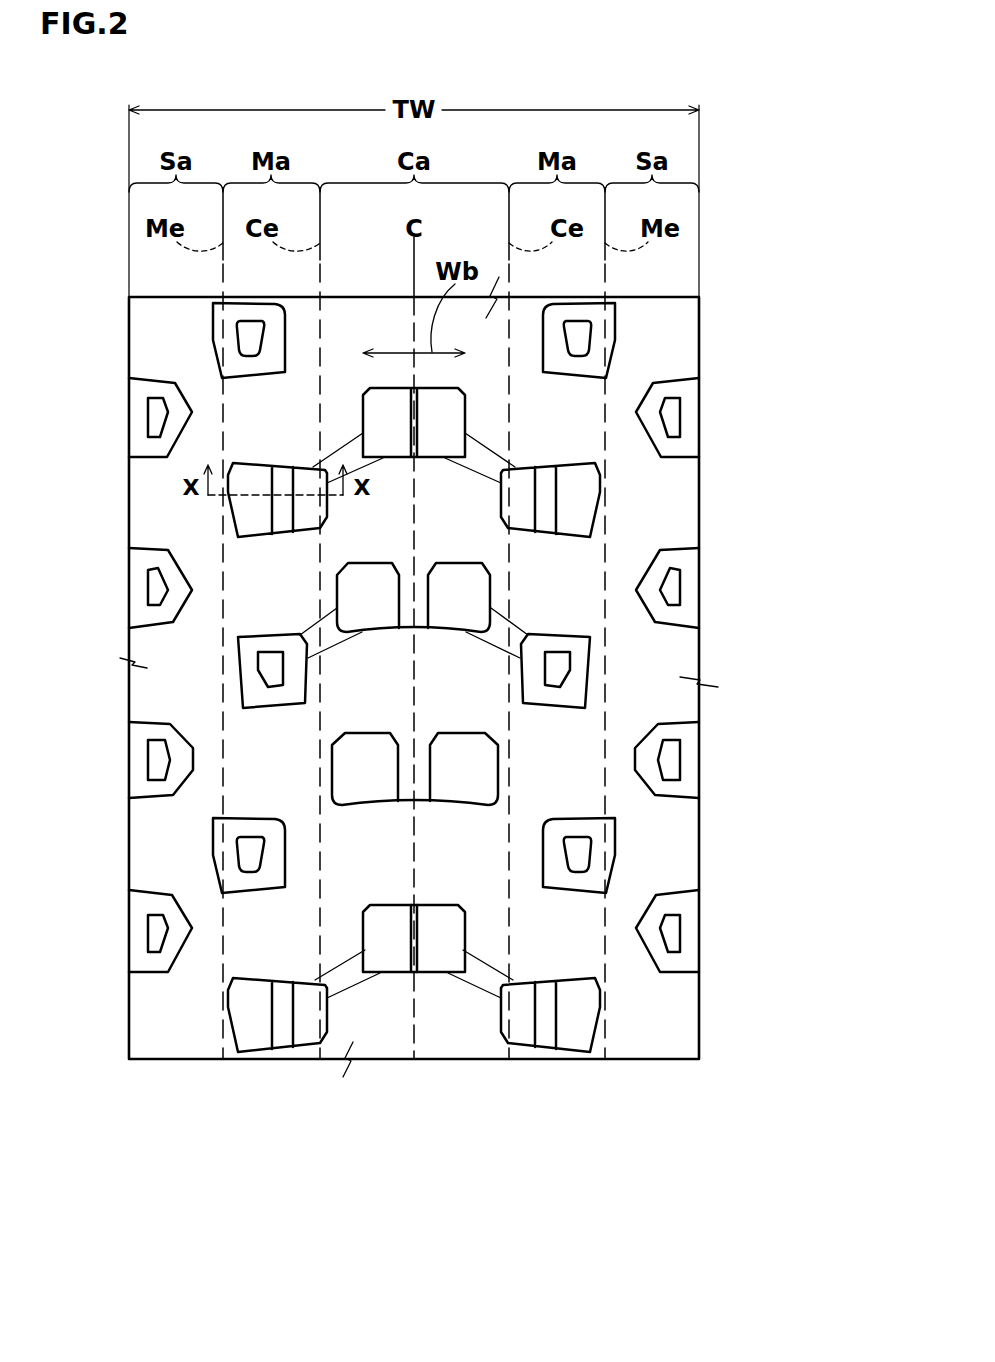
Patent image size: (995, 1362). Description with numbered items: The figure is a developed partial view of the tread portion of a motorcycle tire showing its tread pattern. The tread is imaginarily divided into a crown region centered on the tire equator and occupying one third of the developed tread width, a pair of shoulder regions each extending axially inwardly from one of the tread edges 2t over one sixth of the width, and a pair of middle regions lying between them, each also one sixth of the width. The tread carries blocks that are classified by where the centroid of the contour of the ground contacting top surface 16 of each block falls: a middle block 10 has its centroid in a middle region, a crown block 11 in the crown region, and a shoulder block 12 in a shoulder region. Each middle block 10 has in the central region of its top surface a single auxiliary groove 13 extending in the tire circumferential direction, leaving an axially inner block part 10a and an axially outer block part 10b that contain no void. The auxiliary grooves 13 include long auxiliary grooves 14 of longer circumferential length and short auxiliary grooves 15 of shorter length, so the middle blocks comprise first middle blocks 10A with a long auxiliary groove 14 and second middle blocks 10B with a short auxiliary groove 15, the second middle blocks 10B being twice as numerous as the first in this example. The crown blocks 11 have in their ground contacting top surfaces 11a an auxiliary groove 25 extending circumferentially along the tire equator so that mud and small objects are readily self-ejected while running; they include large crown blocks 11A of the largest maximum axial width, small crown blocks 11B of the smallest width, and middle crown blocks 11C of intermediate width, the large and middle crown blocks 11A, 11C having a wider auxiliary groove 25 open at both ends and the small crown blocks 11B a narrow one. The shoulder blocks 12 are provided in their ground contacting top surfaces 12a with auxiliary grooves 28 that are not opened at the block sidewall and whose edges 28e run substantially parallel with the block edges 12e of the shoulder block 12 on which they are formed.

The tread edge 2t is at (128, 380).
The middle block 10 is at (419, 847).
The first middle block 10A is at (611, 527).
The second middle block 10B is at (609, 679).
The axially inner block part 10a is at (522, 1030).
The axially outer block part 10b is at (578, 1037).
The crown block 11 is at (416, 1040).
The large crown block 11A is at (343, 783).
The small crown block 11B is at (372, 417).
The middle crown block 11C is at (353, 585).
The ground contacting top surface 11a is at (442, 953).
The shoulder block 12 is at (411, 773).
The ground contacting top surface 12a is at (140, 735).
The block edge 12e is at (680, 723).
The auxiliary groove 13 is at (415, 779).
The long auxiliary groove 14 is at (547, 488).
The short auxiliary groove 15 is at (268, 668).
The ground contacting top surface 16 is at (587, 1017).
The auxiliary groove 25 is at (415, 948).
The auxiliary groove 28 is at (160, 763).
The edge 28e is at (676, 760).